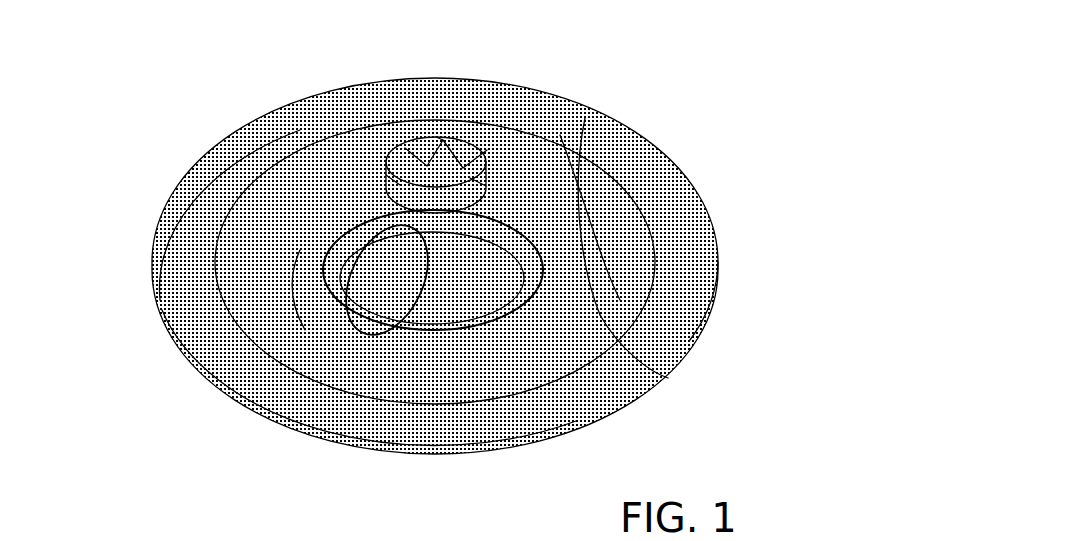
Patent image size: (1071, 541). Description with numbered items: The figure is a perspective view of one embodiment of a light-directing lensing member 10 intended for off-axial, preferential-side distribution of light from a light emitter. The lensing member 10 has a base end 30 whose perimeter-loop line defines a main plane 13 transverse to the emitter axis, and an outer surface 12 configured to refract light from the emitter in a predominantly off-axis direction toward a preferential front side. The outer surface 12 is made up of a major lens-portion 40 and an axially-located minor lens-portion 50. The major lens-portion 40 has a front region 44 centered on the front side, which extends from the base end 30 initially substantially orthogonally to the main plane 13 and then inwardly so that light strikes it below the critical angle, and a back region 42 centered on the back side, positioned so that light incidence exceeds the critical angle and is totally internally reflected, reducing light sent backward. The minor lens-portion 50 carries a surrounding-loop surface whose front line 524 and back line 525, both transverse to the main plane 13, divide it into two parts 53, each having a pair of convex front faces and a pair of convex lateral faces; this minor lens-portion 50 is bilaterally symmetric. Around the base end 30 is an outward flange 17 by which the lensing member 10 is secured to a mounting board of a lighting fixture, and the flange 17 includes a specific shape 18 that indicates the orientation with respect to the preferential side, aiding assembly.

The light-directing lensing member 10 is at (698, 67).
The outer surface 12 is at (495, 92).
The main plane 13 is at (207, 220).
The outward flange 17 is at (178, 338).
The specific shape 18 is at (717, 290).
The base end 30 is at (665, 376).
The major lens-portion 40 is at (600, 208).
The back region 42 is at (310, 282).
The front region 44 is at (583, 115).
The minor lens-portion 50 is at (427, 165).
The parts of surrounding-loop surface 53 is at (397, 157).
The front line 524 is at (466, 152).
The back line 525 is at (418, 262).